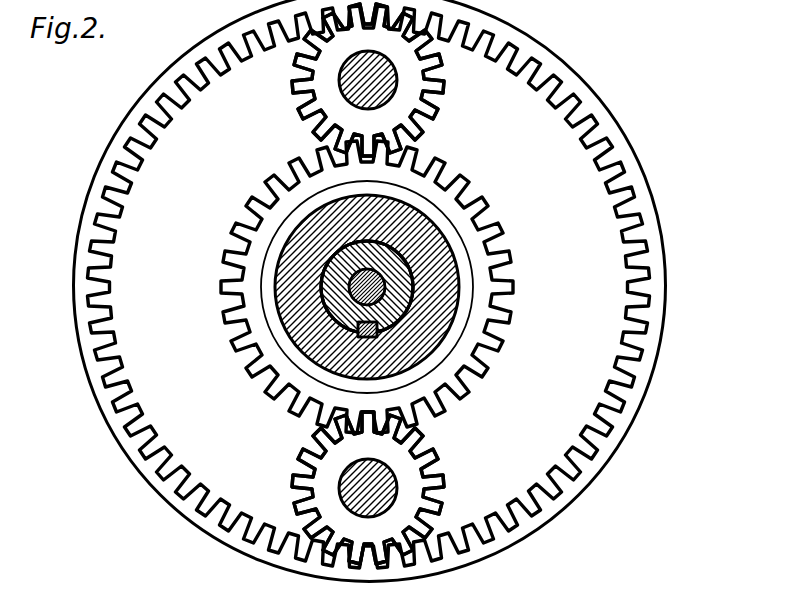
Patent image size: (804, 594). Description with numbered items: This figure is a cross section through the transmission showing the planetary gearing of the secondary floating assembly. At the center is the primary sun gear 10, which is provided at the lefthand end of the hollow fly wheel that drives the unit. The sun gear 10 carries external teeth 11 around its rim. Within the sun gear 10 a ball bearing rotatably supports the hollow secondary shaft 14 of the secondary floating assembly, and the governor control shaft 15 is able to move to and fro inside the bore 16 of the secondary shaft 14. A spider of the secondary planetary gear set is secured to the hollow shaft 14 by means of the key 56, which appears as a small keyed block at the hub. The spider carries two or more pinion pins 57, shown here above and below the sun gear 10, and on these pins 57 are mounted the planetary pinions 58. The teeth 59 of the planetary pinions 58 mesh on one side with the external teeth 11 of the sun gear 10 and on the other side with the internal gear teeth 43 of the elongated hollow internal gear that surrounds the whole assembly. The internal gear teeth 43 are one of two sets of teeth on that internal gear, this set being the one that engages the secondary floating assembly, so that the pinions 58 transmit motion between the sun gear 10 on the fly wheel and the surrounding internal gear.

The internal gear teeth 43 is at (123, 153).
The external teeth 11 is at (270, 182).
The sun gear 10 is at (294, 236).
The secondary shaft 14 is at (327, 270).
The governor control shaft 15 is at (379, 272).
The bore 16 is at (400, 266).
The key 56 is at (358, 330).
The pinion pins 57 is at (339, 79).
The planetary pinions 58 is at (310, 89).
The teeth 59 is at (307, 121).